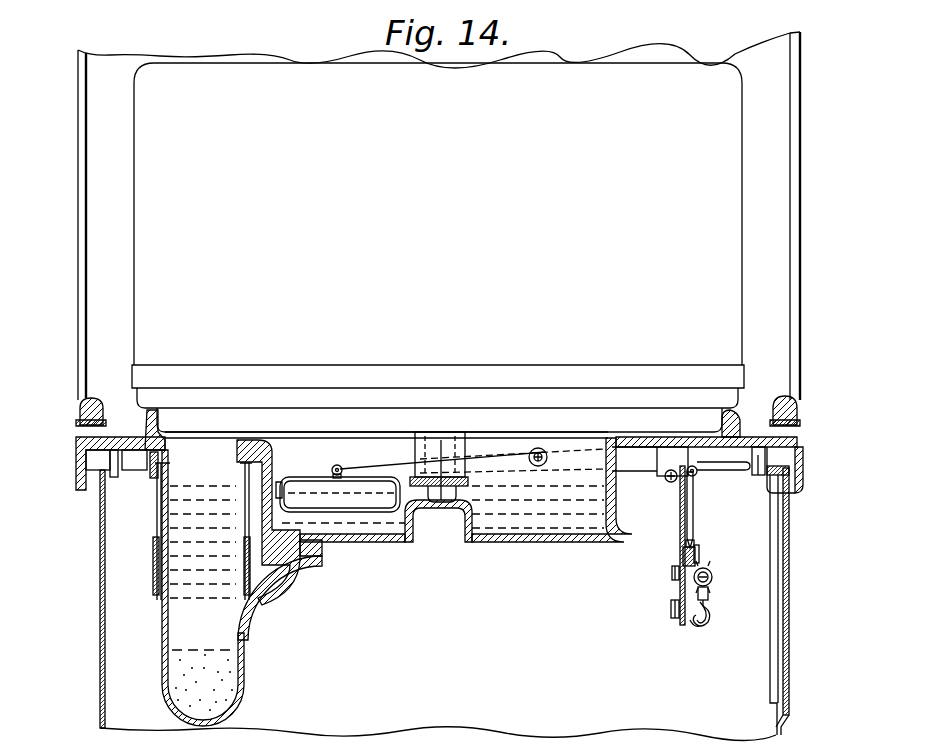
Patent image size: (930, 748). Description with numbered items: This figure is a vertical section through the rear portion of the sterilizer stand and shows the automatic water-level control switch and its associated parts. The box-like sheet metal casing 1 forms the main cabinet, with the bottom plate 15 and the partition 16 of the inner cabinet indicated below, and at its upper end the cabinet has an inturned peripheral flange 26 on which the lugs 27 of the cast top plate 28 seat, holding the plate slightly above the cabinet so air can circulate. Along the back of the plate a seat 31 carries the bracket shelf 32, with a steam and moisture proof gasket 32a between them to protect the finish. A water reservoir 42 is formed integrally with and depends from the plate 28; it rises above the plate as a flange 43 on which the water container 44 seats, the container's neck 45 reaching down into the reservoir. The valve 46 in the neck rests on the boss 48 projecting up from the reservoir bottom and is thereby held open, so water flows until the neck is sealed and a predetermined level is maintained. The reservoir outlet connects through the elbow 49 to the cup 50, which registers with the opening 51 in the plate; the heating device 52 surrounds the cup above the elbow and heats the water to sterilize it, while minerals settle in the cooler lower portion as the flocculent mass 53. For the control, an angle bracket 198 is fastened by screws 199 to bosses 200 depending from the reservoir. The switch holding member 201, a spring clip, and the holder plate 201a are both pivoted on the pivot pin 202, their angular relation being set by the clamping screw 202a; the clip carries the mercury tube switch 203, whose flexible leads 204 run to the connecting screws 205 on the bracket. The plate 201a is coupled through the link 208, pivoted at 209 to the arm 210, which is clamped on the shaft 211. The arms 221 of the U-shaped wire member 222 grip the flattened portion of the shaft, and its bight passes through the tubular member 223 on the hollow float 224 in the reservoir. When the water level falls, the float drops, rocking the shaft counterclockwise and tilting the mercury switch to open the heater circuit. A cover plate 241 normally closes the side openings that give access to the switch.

The sheet metal casing 1 is at (792, 659).
The bottom plate 15 is at (752, 400).
The partition 16 is at (522, 348).
The inturned peripheral flange 26 is at (146, 445).
The lugs 27 is at (92, 492).
The cast top plate 28 is at (76, 445).
The seat 31 is at (80, 412).
The bracket shelf 32 is at (80, 233).
The gasket 32a is at (78, 424).
The water reservoir 42 is at (472, 542).
The flange 43 is at (160, 410).
The water container 44 is at (433, 210).
The neck 45 is at (460, 446).
The valve 46 is at (437, 490).
The boss 48 is at (434, 524).
The elbow 49 is at (300, 604).
The cup 50 is at (166, 636).
The opening 51 is at (192, 452).
The heating device 52 is at (156, 553).
The deposited mineral mass 53 is at (232, 694).
The angle bracket 198 is at (680, 522).
The screws 199 is at (668, 480).
The bosses 200 is at (668, 456).
The switch holding member 201 is at (683, 556).
The holder plate 201a is at (686, 544).
The pivot pin 202 is at (672, 573).
The clamping screw 202a is at (699, 552).
The mercury tube switch 203 is at (712, 577).
The flexible leads 204 is at (700, 628).
The connecting screws 205 is at (710, 616).
The link 208 is at (694, 524).
The pivot 209 is at (696, 474).
The arm 210 is at (630, 462).
The shaft 211 is at (546, 452).
The arms 221 is at (478, 464).
The U-shaped member 222 is at (355, 475).
The tubular member 223 is at (335, 466).
The float 224 is at (374, 512).
The cover plate 241 is at (790, 558).